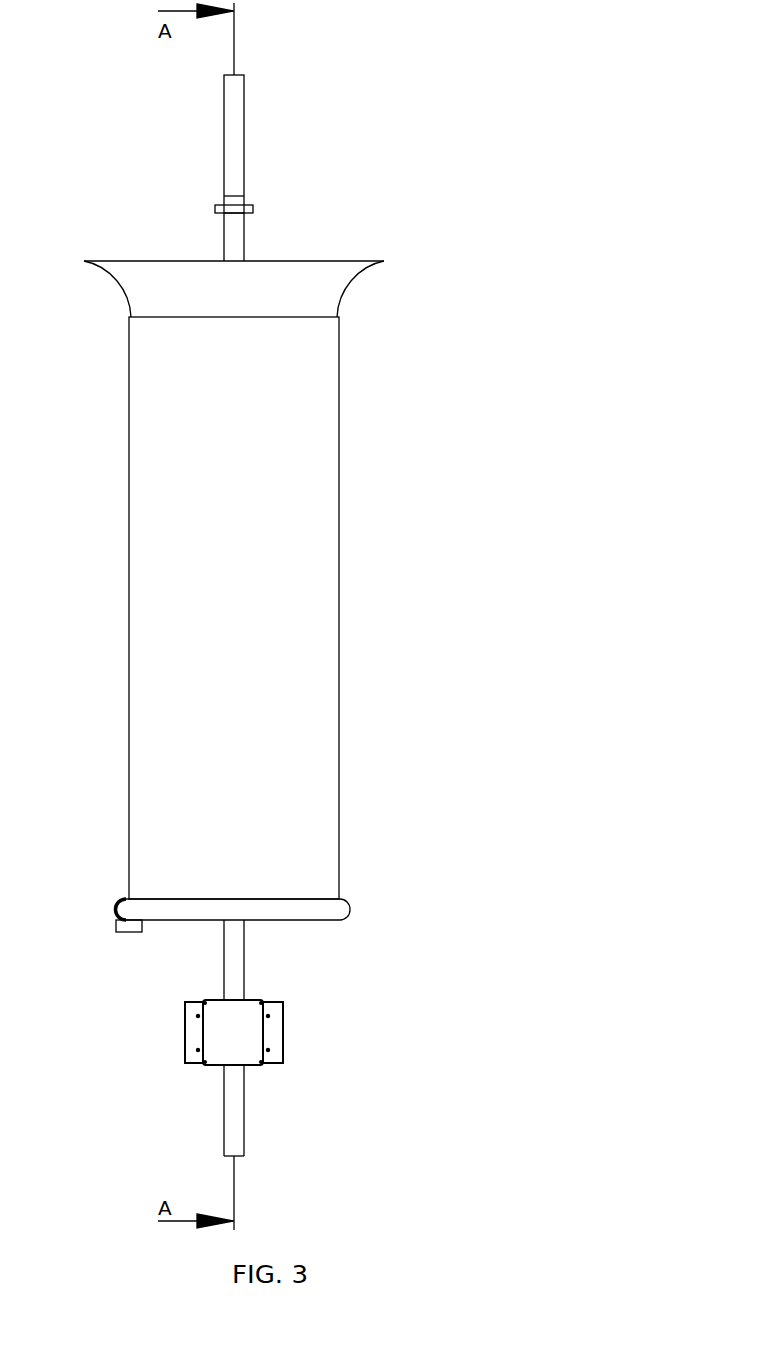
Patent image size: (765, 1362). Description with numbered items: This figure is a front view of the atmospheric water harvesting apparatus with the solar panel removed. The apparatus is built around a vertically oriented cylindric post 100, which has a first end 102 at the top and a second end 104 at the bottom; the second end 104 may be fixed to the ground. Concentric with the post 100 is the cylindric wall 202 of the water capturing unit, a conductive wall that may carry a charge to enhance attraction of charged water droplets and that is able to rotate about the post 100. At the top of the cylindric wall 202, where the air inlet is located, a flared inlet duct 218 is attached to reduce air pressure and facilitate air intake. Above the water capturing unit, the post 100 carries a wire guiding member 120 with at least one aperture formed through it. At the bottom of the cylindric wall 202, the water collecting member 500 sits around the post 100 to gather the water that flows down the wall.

The post 100 is at (227, 233).
The first end 102 is at (242, 70).
The second end 104 is at (242, 1162).
The wire guiding member 120 is at (253, 210).
The cylindric wall 202 is at (339, 584).
The flared inlet duct 218 is at (327, 290).
The water collecting member 500 is at (350, 906).